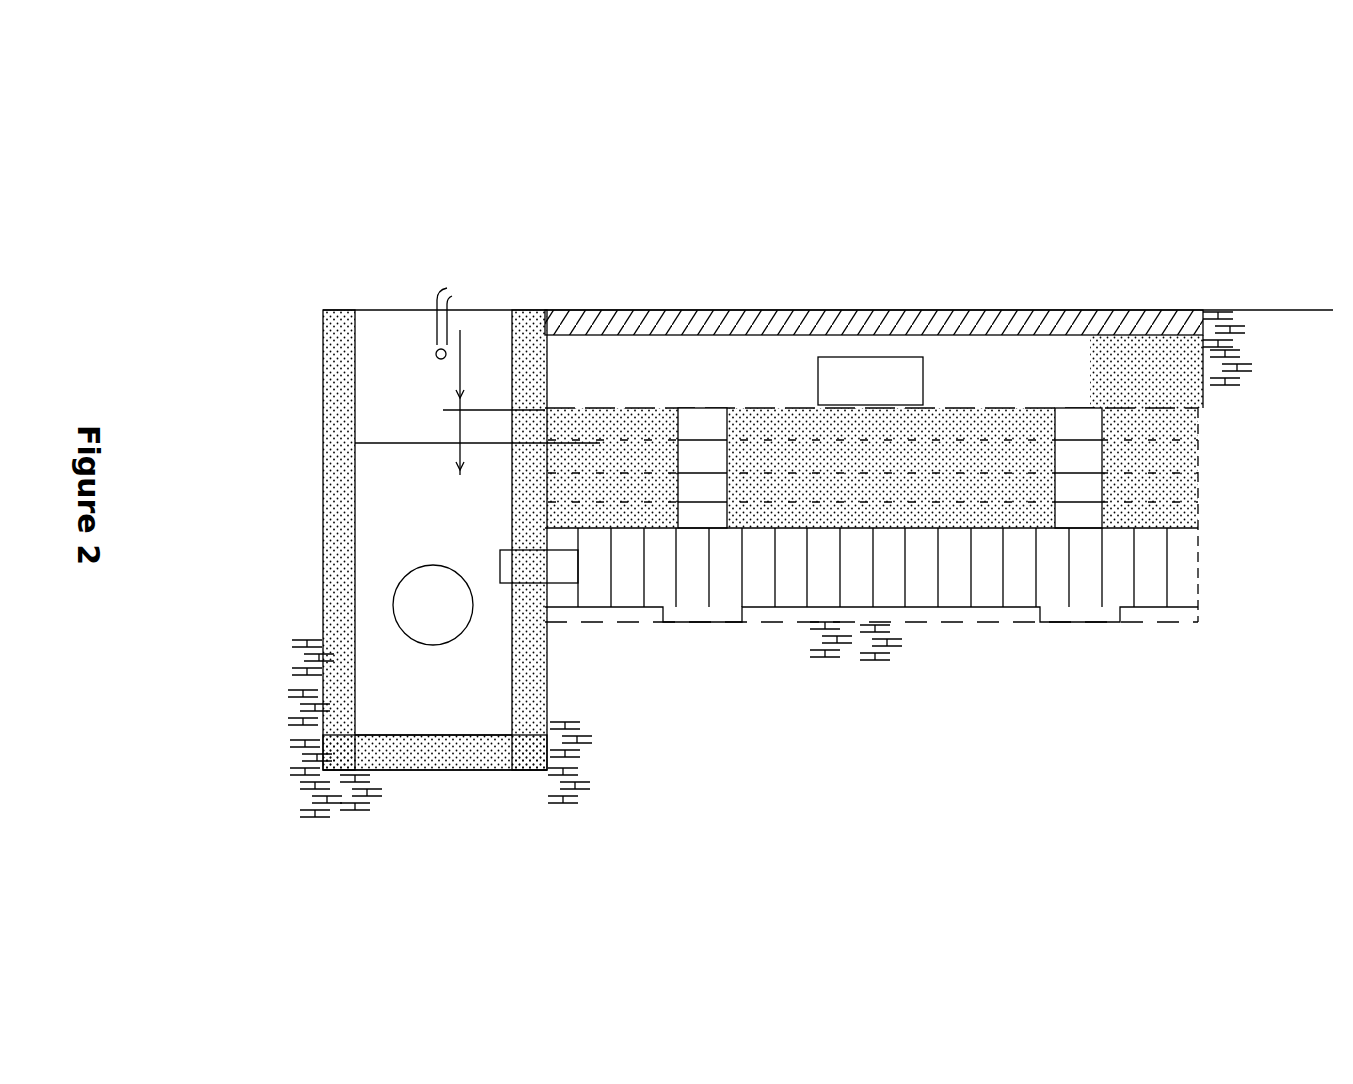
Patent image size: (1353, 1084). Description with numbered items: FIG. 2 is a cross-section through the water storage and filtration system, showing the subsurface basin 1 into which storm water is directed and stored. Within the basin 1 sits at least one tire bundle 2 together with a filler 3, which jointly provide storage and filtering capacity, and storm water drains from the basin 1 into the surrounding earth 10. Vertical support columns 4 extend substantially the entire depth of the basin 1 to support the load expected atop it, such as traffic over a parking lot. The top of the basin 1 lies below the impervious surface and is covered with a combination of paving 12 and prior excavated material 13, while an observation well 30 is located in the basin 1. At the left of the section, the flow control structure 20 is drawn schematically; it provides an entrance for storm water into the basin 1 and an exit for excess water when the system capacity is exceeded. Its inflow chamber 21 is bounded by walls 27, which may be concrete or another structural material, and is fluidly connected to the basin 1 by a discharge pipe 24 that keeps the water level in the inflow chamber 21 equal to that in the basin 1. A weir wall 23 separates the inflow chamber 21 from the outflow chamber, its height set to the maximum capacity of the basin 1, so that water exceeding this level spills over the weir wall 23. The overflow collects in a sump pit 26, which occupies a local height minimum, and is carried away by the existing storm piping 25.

The subsurface basin 1 is at (930, 502).
The tire bundle 2 is at (920, 592).
The filler 3 is at (1140, 497).
The vertical support column 4 is at (700, 460).
The surrounding earth 10 is at (1230, 355).
The paving 12 is at (1000, 318).
The prior excavated material 13 is at (873, 286).
The flow control structure 20 is at (403, 493).
The inflow chamber 21 is at (395, 525).
The weir wall 23 is at (383, 438).
The discharge pipe 24 is at (535, 568).
The existing storm piping 25 is at (395, 600).
The sump pit 26 is at (405, 705).
The walls 27 is at (530, 330).
The observation well 30 is at (870, 388).